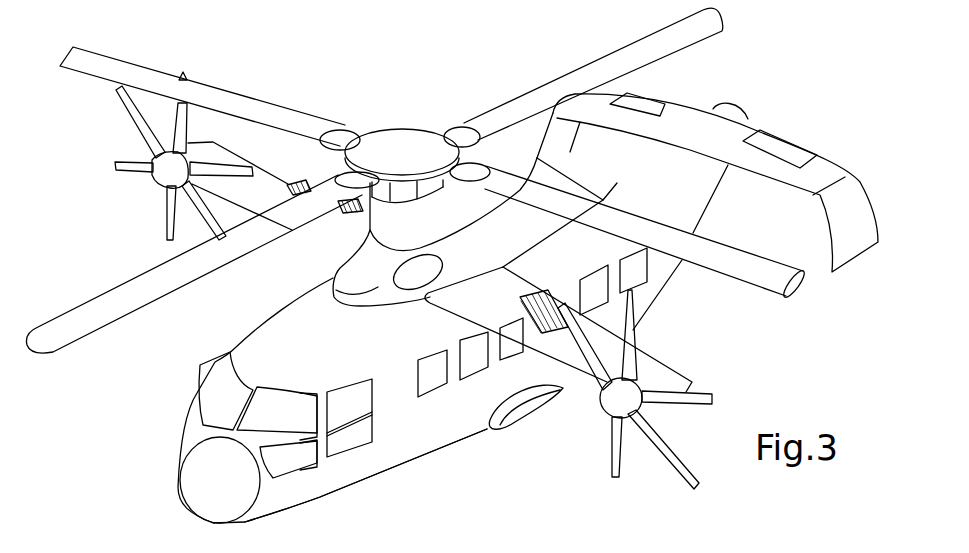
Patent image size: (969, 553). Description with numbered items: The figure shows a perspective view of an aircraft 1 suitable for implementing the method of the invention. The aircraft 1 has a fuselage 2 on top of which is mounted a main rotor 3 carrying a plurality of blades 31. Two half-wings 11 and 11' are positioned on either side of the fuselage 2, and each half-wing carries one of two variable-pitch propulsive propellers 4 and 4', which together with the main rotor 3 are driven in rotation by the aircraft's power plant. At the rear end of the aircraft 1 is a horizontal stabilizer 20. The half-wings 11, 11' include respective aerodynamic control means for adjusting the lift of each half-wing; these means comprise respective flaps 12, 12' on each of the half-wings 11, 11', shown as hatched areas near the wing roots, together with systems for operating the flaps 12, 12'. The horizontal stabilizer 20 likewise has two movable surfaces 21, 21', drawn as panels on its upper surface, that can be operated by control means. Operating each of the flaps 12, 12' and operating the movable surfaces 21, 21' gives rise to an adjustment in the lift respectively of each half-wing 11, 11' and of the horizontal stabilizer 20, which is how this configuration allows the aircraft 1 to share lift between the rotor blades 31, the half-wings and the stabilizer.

The aircraft 1 is at (481, 483).
The fuselage 2 is at (396, 470).
The main rotor 3 is at (359, 116).
The variable-pitch propulsive propeller 4 is at (635, 407).
The variable-pitch propulsive propeller 4' is at (178, 156).
The half-wing 11 is at (563, 348).
The half-wing 11' is at (275, 145).
The flap 12 is at (537, 271).
The flap 12' is at (301, 134).
The horizontal stabilizer 20 is at (866, 192).
The movable surface 21 is at (780, 121).
The movable surface 21' is at (659, 86).
The blade 31 is at (73, 320).